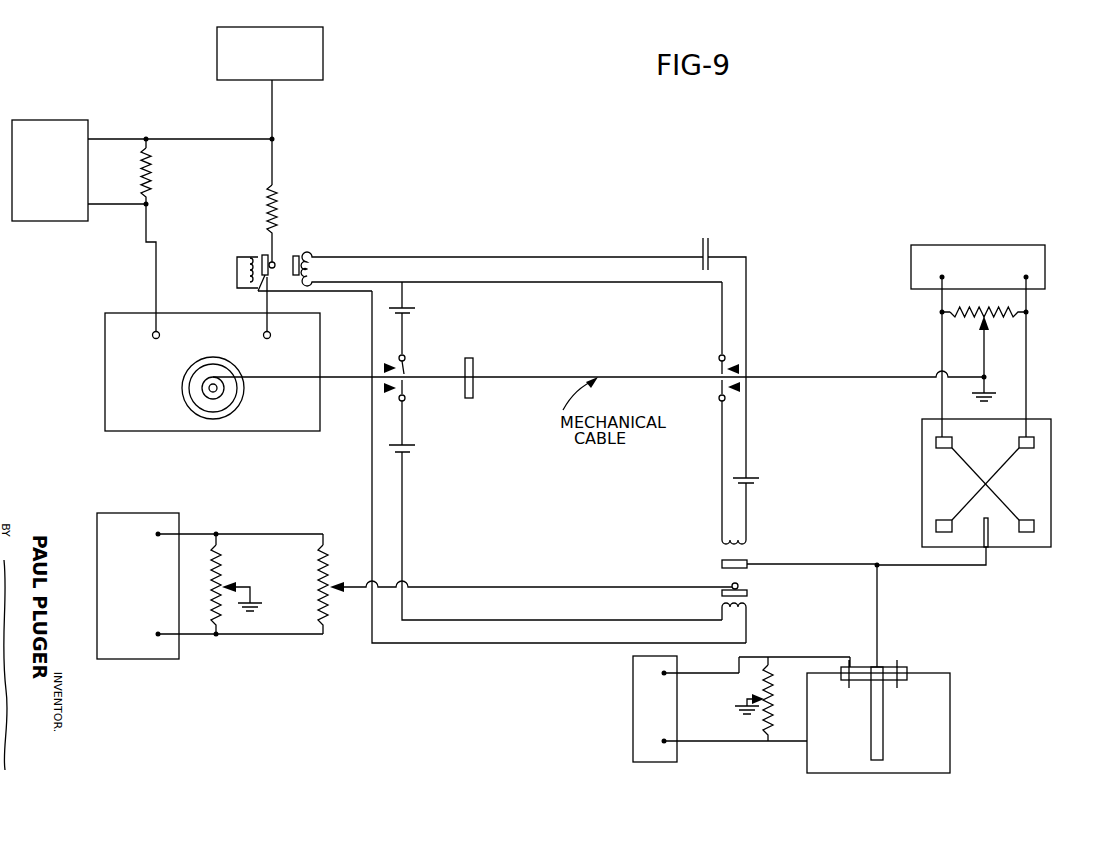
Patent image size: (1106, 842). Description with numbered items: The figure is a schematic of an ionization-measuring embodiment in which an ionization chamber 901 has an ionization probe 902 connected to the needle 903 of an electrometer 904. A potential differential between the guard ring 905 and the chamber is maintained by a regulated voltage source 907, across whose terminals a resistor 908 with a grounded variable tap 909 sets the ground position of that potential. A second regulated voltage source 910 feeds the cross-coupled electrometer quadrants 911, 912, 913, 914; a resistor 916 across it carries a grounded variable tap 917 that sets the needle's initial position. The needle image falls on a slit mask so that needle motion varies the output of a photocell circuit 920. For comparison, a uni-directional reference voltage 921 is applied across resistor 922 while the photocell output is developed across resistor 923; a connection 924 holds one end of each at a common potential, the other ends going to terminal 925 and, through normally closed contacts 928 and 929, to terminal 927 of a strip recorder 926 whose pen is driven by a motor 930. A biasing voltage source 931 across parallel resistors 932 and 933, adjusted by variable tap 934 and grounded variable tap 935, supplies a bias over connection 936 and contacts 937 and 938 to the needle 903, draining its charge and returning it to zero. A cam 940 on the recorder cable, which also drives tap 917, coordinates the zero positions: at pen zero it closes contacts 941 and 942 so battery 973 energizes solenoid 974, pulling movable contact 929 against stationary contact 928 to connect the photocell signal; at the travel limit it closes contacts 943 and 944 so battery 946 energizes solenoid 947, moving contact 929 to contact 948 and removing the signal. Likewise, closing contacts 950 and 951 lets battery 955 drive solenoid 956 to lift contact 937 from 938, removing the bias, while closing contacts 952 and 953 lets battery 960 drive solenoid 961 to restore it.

The ionization chamber 901 is at (950, 733).
The ionization probe 902 is at (882, 716).
The electrometer needle 903 is at (990, 532).
The electrometer 904 is at (1051, 492).
The guard ring 905 is at (832, 655).
The regulated voltage source 907 is at (644, 712).
The resistor 908 is at (756, 682).
The variable tap 909 is at (735, 699).
The regulated voltage source 910 is at (972, 280).
The electrometer quadrant 911 is at (952, 442).
The electrometer quadrant 912 is at (1014, 444).
The electrometer quadrant 913 is at (948, 520).
The electrometer quadrant 914 is at (1024, 520).
The resistor 916 is at (994, 308).
The variable tap 917 is at (982, 336).
The photocell circuit 920 is at (262, 78).
The source of uni-directional reference voltage 921 is at (33, 187).
The resistor 922 is at (152, 180).
The resistor 923 is at (282, 214).
The connection 924 is at (222, 138).
The terminal 925 is at (156, 339).
The strip recorder 926 is at (105, 420).
The terminal 927 is at (270, 338).
The stationary contact 928 is at (252, 292).
The movable contact 929 is at (276, 262).
The motor 930 is at (182, 377).
The biasing voltage source 931 is at (144, 614).
The resistor 932 is at (330, 566).
The resistor 933 is at (210, 564).
The variable tap 934 is at (346, 592).
The grounded variable tap 935 is at (250, 588).
The connection 936 is at (542, 596).
The movable contact 937 is at (738, 585).
The contact 938 is at (722, 564).
The cam 940 is at (473, 390).
The contact 941 is at (408, 366).
The contact 942 is at (384, 368).
The contact 943 is at (716, 366).
The contact 944 is at (739, 369).
The battery 946 is at (716, 254).
The solenoid 947 is at (320, 268).
The contact 948 is at (305, 258).
The contact 950 is at (408, 388).
The contact 951 is at (384, 388).
The contact 952 is at (740, 387).
The contact 953 is at (718, 396).
The battery 955 is at (416, 449).
The solenoid 956 is at (746, 613).
The battery 960 is at (756, 480).
The solenoid 961 is at (746, 544).
The battery 973 is at (416, 310).
The solenoid 974 is at (250, 258).